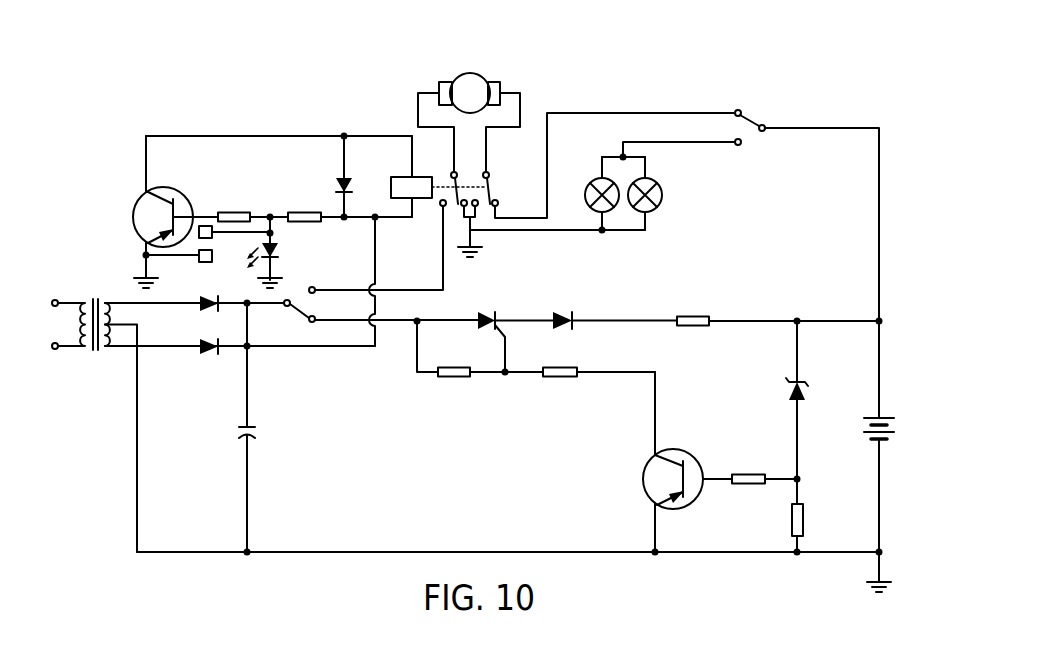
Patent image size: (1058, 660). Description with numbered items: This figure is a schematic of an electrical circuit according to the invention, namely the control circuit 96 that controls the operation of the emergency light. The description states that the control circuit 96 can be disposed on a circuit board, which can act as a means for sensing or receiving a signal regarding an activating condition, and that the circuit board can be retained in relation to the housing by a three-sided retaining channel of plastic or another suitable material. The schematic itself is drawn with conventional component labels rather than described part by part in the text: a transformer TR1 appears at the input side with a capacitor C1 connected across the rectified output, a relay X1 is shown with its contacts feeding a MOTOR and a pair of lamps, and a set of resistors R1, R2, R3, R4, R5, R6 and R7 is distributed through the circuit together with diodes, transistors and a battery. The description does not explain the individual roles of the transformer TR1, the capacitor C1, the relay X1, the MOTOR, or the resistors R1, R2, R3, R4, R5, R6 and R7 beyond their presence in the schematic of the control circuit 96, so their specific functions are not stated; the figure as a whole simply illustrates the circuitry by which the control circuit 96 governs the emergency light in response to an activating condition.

The control circuit 96 is at (740, 56).
The resistor R1 is at (454, 382).
The resistor R2 is at (560, 382).
The resistor R3 is at (810, 520).
The resistor R4 is at (748, 468).
The resistor R5 is at (693, 311).
The resistor R6 is at (304, 207).
The resistor R7 is at (234, 207).
The capacitor C1 is at (262, 436).
The transformer TR1 is at (81, 335).
The relay X1 is at (411, 187).
The motor MOTOR is at (478, 82).